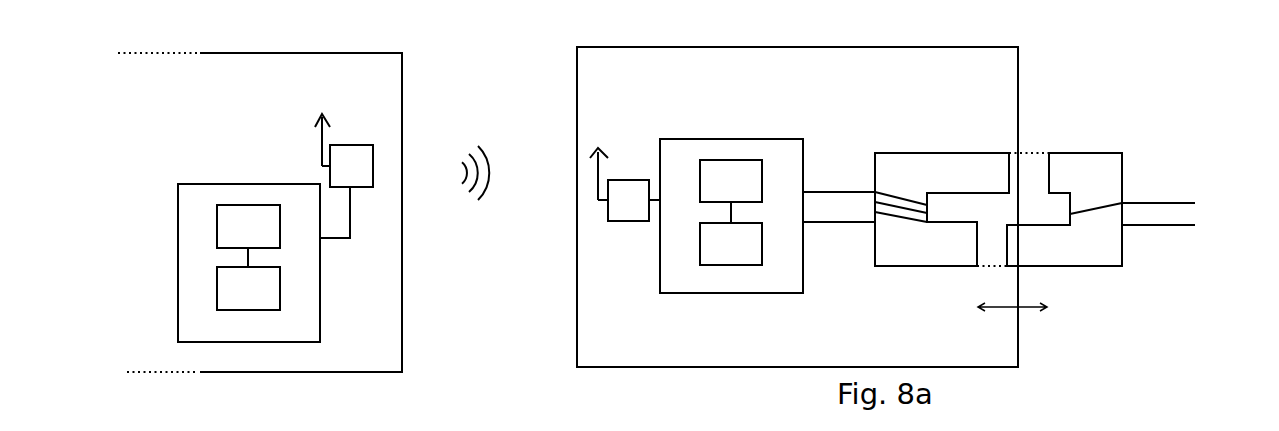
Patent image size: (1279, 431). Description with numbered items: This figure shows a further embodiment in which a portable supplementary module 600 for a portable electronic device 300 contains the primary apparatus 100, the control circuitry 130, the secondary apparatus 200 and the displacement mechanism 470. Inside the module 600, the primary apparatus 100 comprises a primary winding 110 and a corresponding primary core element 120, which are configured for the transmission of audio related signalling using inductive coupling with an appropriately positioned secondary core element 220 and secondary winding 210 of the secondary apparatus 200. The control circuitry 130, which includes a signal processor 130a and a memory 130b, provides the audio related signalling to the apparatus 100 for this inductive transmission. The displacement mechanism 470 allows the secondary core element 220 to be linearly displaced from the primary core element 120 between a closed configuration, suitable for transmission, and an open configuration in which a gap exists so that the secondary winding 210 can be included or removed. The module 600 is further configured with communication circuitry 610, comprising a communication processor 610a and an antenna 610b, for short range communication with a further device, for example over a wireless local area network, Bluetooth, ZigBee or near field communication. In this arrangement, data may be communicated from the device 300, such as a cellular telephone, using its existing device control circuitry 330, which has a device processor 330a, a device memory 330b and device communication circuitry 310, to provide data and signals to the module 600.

The portable electronic device 300 is at (260, 63).
The device communication circuitry 310 is at (352, 155).
The device control circuitry 330 is at (238, 195).
The device processor 330a is at (276, 242).
The device memory 330b is at (276, 303).
The supplementary module 600 is at (855, 78).
The communication circuitry 610 is at (574, 171).
The communication processor 610a is at (630, 210).
The antenna 610b is at (598, 180).
The control circuitry 130 is at (723, 150).
The signal processor 130a is at (704, 197).
The memory 130b is at (704, 259).
The apparatus 100 is at (937, 196).
The primary winding 110 is at (915, 193).
The primary core element 120 is at (905, 243).
The displacement mechanism 470 is at (1020, 177).
The secondary apparatus 200 is at (1121, 202).
The secondary winding 210 is at (1095, 203).
The secondary core element 220 is at (1085, 243).